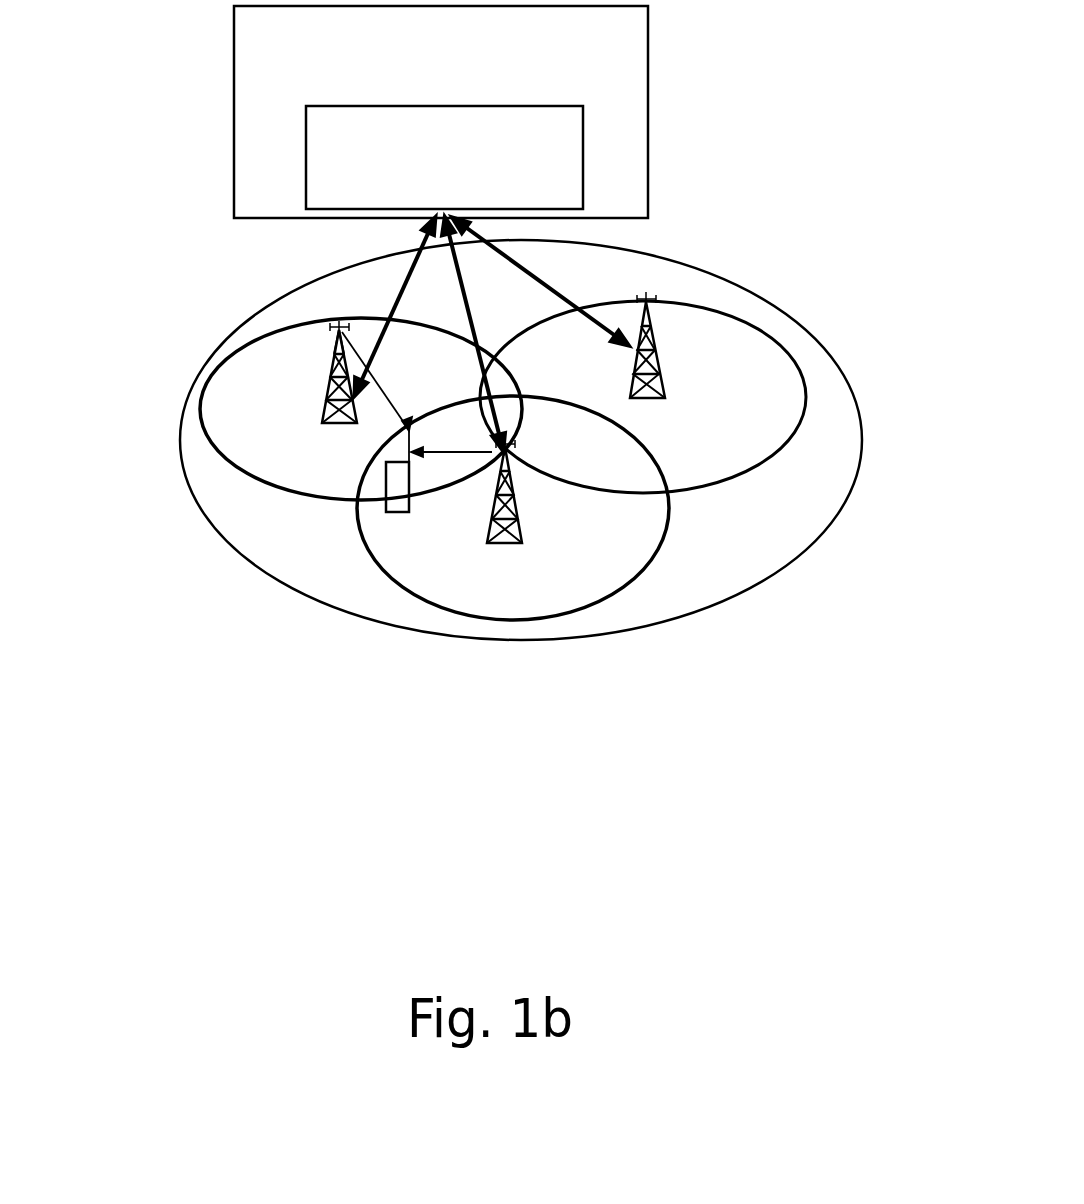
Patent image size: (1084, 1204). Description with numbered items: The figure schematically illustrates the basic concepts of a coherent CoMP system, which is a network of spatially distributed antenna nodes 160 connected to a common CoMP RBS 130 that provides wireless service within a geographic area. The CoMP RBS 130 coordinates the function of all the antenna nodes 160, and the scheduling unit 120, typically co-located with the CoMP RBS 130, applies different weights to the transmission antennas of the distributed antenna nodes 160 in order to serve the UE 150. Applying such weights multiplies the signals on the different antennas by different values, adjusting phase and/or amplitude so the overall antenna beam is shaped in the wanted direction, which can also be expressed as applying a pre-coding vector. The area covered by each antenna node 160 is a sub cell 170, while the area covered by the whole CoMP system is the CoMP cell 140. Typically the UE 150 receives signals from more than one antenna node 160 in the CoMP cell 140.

The CoMP RBS 130 is at (513, 55).
The scheduling unit 120 is at (382, 196).
The CoMP cell 140 is at (833, 480).
The sub cell 170 is at (222, 387).
The antenna node 160 is at (657, 342).
The UE 150 is at (383, 482).